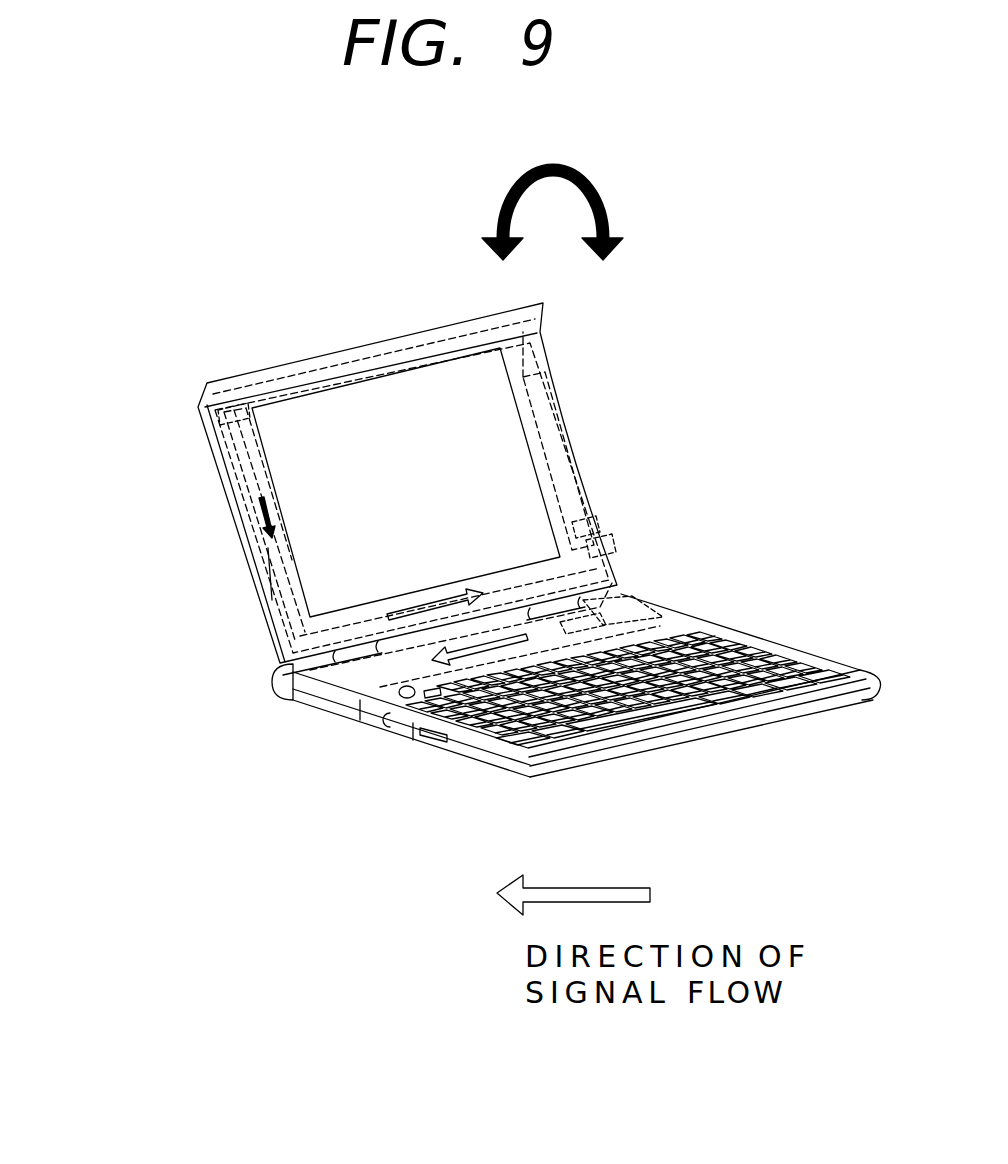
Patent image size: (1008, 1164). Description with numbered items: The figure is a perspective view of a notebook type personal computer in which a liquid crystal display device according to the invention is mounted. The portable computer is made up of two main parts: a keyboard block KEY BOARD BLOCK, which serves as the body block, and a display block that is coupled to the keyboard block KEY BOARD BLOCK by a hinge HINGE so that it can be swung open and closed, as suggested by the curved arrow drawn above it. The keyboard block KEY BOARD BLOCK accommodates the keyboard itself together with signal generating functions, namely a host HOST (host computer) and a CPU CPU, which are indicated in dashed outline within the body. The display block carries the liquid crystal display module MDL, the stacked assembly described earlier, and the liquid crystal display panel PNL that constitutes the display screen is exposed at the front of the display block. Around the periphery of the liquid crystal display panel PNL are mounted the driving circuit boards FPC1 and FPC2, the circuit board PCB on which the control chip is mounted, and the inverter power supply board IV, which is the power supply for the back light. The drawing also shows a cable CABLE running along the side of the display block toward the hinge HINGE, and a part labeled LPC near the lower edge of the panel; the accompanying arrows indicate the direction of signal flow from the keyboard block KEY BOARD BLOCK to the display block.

The liquid crystal display panel PNL is at (406, 482).
The driving circuit board FPC1 is at (237, 418).
The circuit board PCB is at (227, 440).
The cable CABLE is at (267, 548).
The inverter power supply board IV is at (550, 402).
The driving circuit board FPC2 is at (588, 527).
The LCD panel controller LPC is at (597, 547).
The liquid crystal display module MDL is at (597, 567).
The host HOST is at (625, 600).
The element CPU is at (663, 617).
The hinge HINGE is at (352, 655).
The keyboard block KEY BOARD BLOCK is at (707, 703).